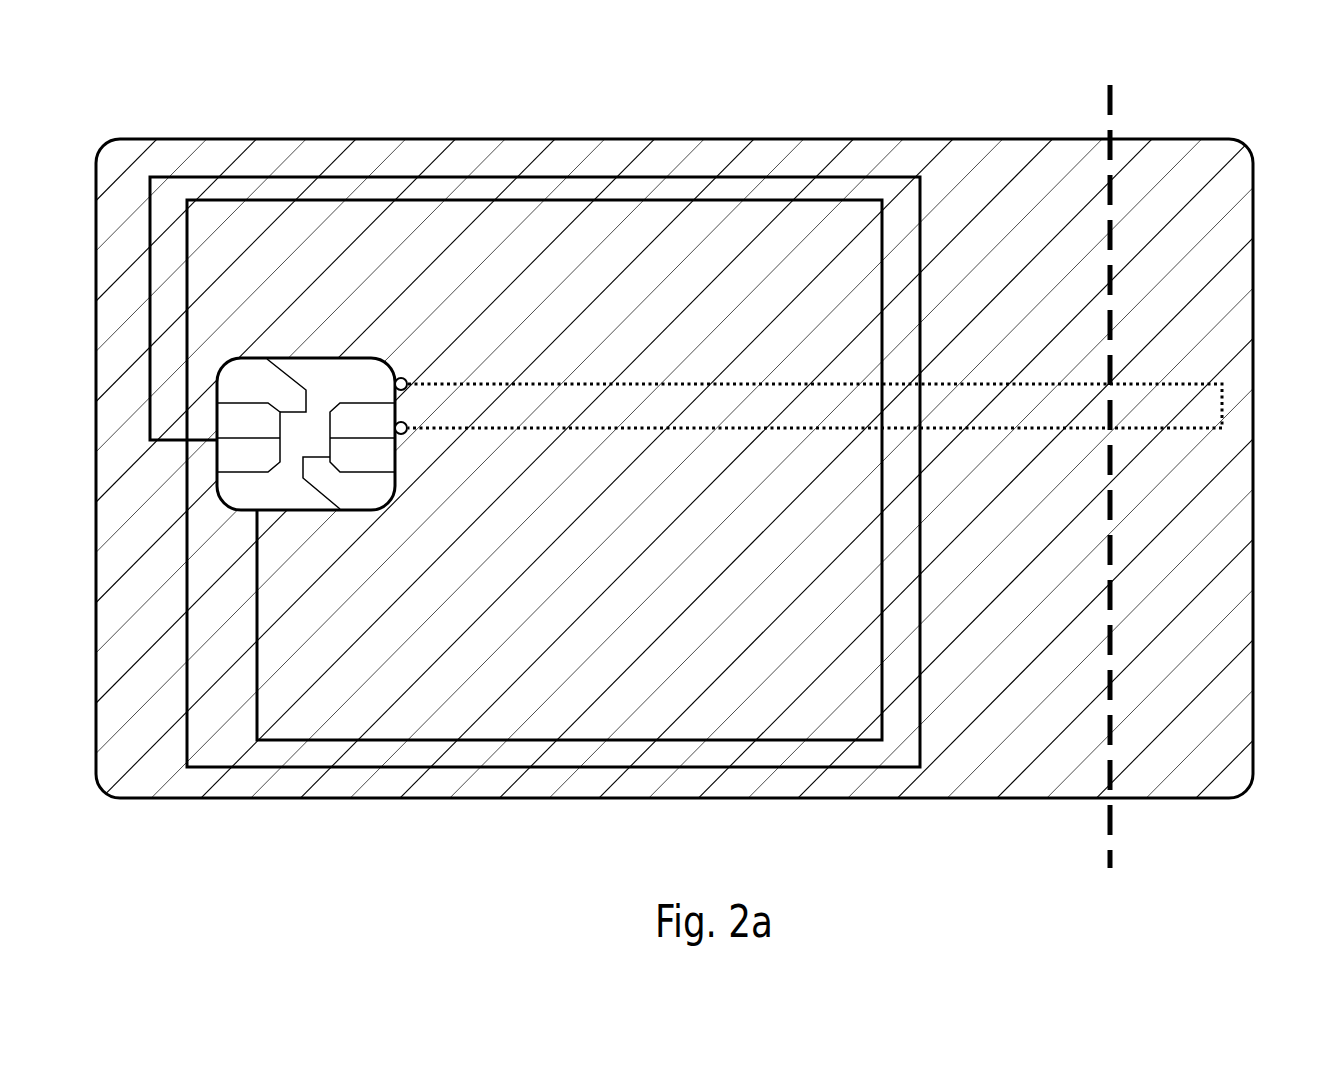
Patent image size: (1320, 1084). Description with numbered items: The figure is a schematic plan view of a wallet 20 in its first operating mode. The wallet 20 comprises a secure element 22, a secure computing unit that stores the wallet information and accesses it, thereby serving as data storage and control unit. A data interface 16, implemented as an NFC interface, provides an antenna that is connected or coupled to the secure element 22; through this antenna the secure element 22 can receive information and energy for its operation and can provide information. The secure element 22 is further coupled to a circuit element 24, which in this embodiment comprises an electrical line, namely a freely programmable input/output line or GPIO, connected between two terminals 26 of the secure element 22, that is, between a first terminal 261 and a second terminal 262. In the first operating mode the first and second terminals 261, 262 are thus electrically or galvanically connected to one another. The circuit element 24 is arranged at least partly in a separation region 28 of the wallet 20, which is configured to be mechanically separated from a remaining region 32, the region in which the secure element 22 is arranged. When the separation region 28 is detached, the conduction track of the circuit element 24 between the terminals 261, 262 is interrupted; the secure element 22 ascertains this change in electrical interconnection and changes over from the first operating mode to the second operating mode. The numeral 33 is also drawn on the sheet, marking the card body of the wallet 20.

The wallet 20 is at (1308, 81).
The data interface 16 is at (608, 166).
The secure element 22 is at (299, 357).
The terminals 26 is at (426, 409).
The first terminal 261 is at (404, 377).
The second terminal 262 is at (404, 435).
The circuit element 24 is at (1222, 405).
The separation region 28 is at (1253, 131).
The remaining region 32 is at (1098, 815).
The card body 33 is at (1228, 752).